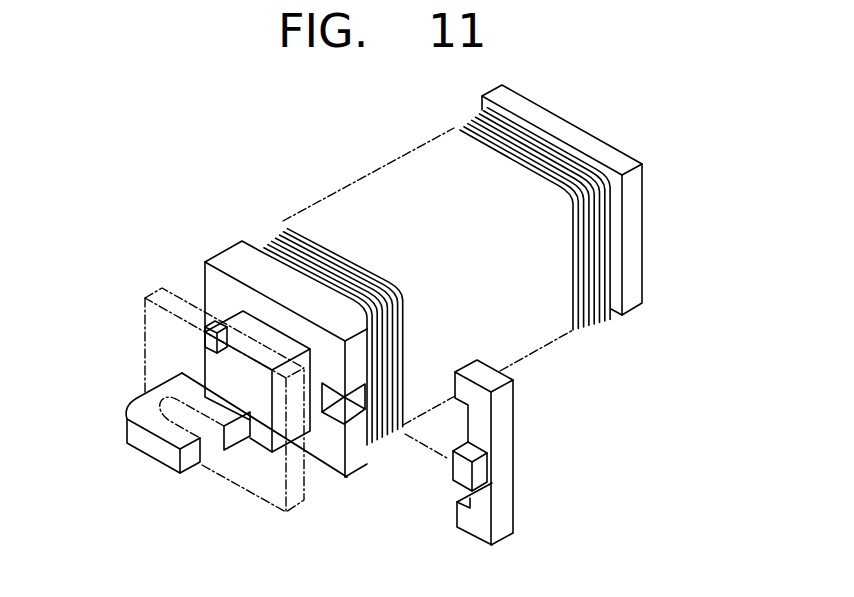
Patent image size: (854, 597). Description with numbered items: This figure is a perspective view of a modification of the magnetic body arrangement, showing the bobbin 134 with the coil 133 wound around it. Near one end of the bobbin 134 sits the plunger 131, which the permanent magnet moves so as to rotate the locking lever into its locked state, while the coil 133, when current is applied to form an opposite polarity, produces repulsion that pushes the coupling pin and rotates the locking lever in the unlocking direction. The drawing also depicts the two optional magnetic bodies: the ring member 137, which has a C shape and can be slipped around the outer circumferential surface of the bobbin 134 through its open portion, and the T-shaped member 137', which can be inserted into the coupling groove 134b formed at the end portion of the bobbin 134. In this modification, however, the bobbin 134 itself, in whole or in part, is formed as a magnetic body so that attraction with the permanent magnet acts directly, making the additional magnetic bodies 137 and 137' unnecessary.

The plunger 131 is at (135, 400).
The coil 133 is at (346, 260).
The bobbin 134 is at (280, 287).
The coupling groove 134b is at (344, 410).
The ring member 137 is at (520, 452).
The T-shaped member 137' is at (173, 300).